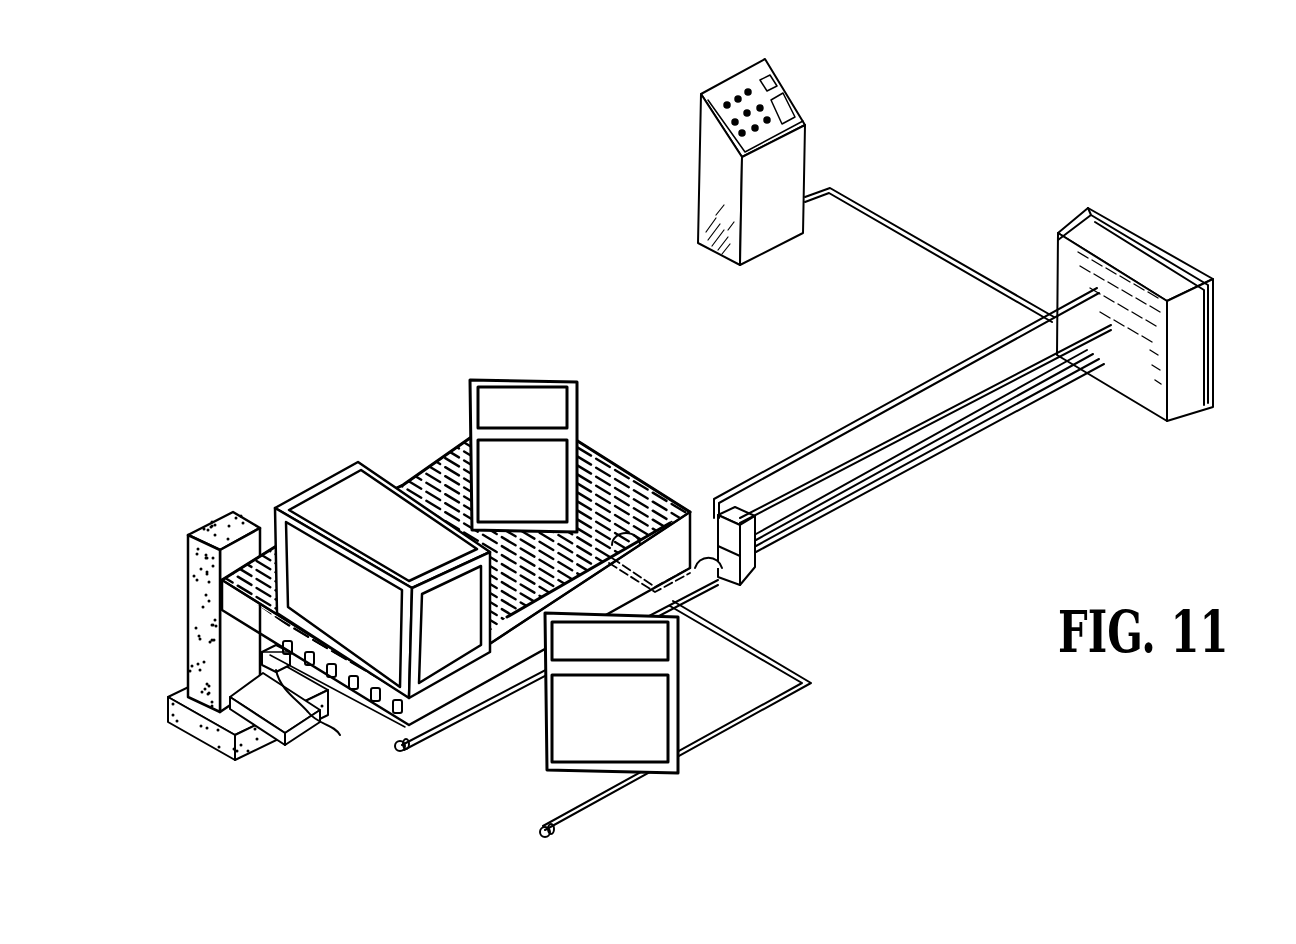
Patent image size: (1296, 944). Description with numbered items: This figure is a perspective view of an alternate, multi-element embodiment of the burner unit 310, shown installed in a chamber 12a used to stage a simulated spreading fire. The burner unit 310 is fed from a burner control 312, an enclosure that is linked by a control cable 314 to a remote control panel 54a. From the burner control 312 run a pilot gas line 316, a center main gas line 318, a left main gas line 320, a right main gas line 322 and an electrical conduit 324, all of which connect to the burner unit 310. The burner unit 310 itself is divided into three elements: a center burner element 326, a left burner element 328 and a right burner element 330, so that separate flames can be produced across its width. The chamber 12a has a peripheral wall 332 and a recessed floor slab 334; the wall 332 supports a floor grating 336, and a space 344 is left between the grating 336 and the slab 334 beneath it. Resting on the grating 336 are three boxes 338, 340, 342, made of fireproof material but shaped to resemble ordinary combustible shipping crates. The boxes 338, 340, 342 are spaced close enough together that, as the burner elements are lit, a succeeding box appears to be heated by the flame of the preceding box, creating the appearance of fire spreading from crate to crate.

The chamber 12a is at (241, 632).
The peripheral wall 332 is at (188, 562).
The floor grating 336 is at (185, 632).
The recessed floor slab 334 is at (253, 692).
The space 344 is at (262, 655).
The left burner element 328 is at (325, 717).
The box 340 is at (354, 466).
The box 338 is at (505, 381).
The box 342 is at (582, 738).
The burner unit 310 is at (740, 577).
The center burner element 326 is at (420, 742).
The right burner element 330 is at (580, 822).
The control panel 54a is at (806, 112).
The burner control 312 is at (1180, 264).
The control cable 314 is at (903, 228).
The electrical conduit 324 is at (897, 404).
The pilot gas line 316 is at (972, 402).
The center main gas line 318 is at (945, 446).
The left main gas line 320 is at (1010, 392).
The right main gas line 322 is at (880, 486).